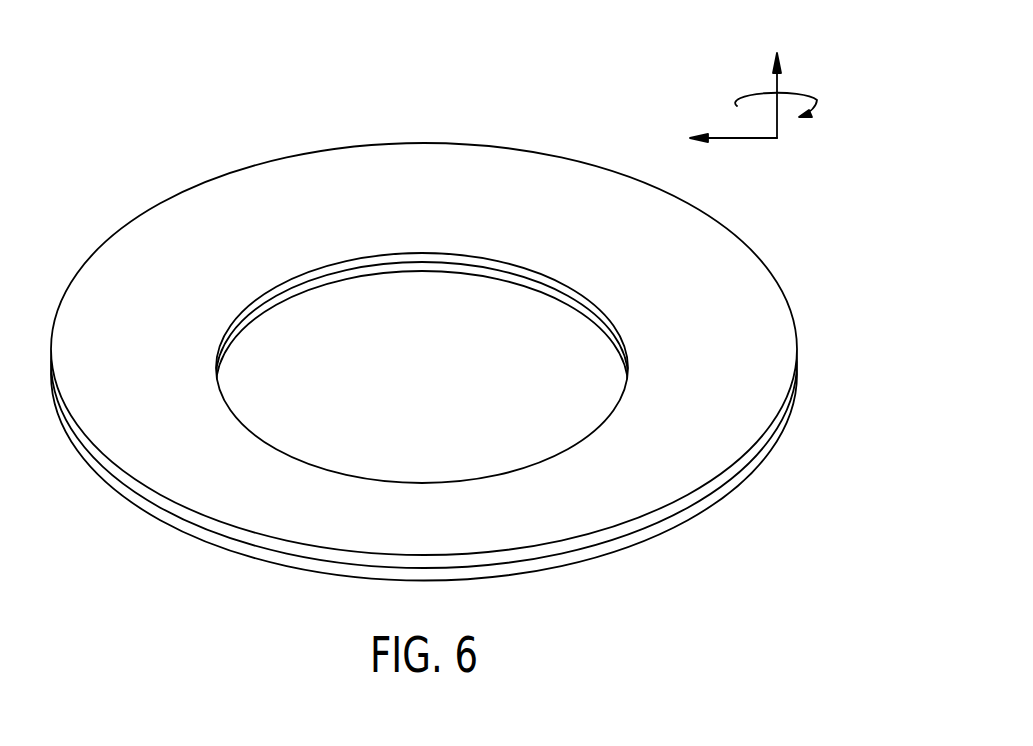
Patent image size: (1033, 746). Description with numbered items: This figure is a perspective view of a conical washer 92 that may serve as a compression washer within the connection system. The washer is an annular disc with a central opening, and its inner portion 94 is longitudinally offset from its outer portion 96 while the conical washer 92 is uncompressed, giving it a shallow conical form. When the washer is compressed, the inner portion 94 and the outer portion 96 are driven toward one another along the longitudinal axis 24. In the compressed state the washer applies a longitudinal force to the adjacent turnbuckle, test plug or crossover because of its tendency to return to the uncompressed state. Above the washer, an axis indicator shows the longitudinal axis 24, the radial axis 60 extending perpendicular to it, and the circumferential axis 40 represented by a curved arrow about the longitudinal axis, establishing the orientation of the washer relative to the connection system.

The conical washer 92 is at (441, 363).
The inner portion 94 is at (417, 254).
The outer portion 96 is at (797, 331).
The longitudinal axis 24 is at (781, 125).
The radial axis 60 is at (737, 140).
The circumferential axis 40 is at (752, 88).